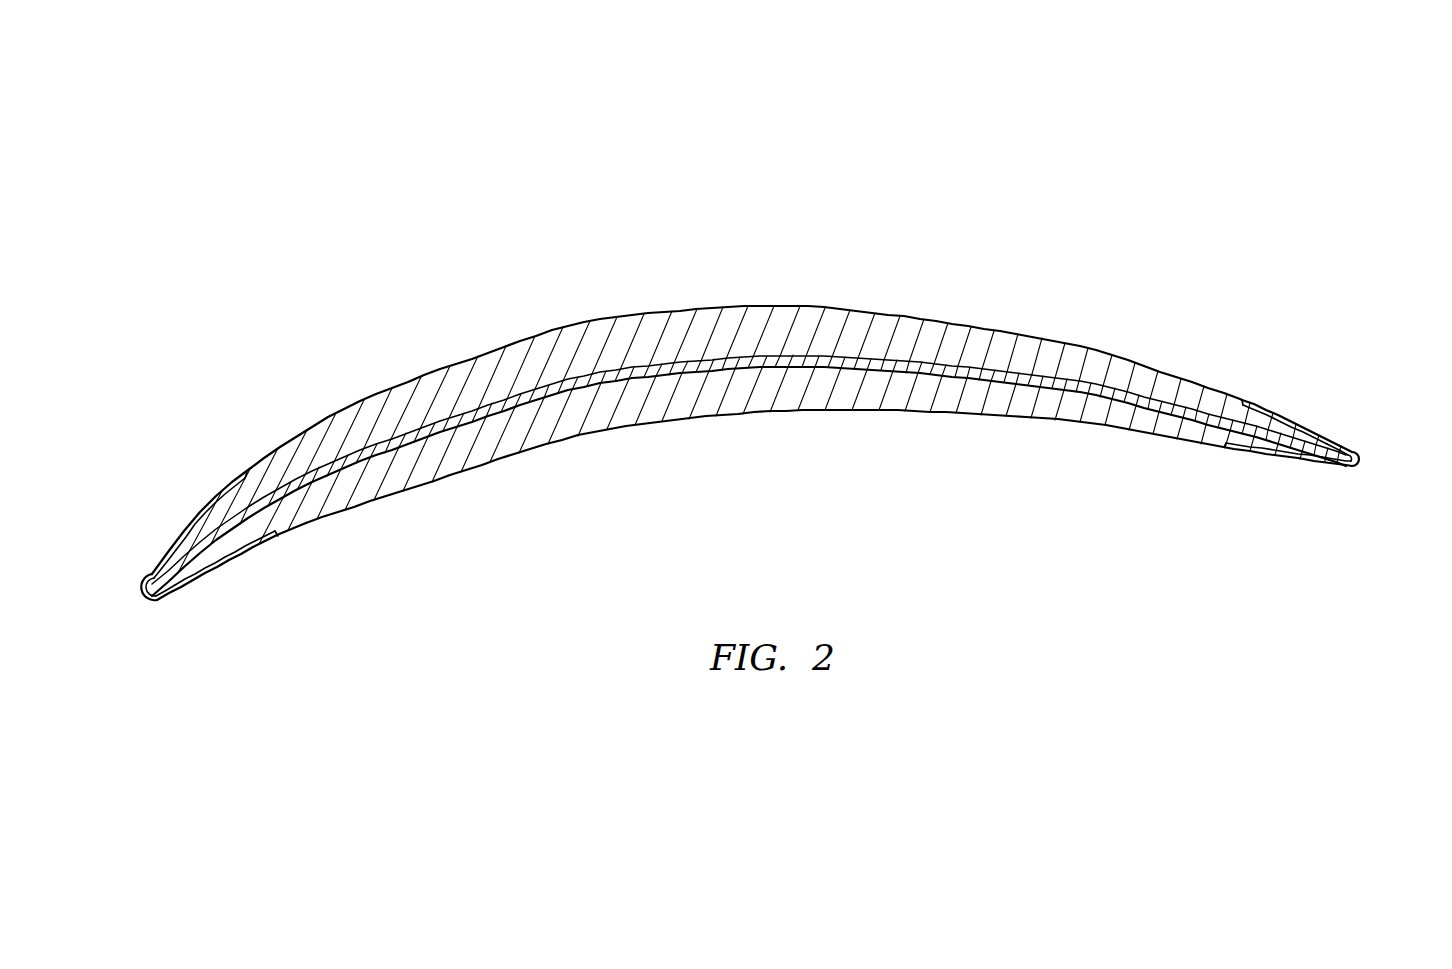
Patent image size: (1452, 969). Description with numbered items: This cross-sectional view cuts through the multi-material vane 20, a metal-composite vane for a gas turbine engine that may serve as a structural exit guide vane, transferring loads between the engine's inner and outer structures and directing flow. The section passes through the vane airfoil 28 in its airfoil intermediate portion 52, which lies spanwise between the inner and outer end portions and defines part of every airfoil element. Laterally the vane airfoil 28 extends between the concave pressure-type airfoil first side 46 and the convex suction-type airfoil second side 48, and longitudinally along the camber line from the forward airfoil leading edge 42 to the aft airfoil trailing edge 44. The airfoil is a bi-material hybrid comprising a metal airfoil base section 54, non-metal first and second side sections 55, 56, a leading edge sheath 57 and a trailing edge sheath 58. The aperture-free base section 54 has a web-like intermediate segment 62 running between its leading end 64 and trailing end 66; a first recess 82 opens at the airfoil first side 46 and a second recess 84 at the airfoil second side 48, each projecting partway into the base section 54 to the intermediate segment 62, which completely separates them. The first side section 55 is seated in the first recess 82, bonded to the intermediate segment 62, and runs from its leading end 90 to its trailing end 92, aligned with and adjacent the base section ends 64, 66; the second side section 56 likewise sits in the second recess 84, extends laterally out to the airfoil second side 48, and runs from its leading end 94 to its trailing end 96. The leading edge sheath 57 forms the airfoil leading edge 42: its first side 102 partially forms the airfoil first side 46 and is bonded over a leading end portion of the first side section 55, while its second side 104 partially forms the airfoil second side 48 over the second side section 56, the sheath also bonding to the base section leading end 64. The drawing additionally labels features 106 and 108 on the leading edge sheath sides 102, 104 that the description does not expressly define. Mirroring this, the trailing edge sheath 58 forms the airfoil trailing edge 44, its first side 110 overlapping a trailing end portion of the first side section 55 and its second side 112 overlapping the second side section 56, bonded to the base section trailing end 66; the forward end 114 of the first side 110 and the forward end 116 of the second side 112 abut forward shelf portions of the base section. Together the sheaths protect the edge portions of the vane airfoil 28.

The multi-material vane 20 is at (1139, 137).
The vane airfoil 28 is at (1140, 228).
The airfoil intermediate portion 52 is at (765, 403).
The airfoil leading edge 42 is at (147, 592).
The airfoil trailing edge 44 is at (1357, 466).
The airfoil first side 46 is at (600, 436).
The airfoil second side 48 is at (590, 318).
The airfoil base section 54 is at (395, 451).
The first side section 55 is at (498, 457).
The second side section 56 is at (463, 362).
The leading edge sheath 57 is at (210, 590).
The trailing edge sheath 58 is at (1292, 420).
The intermediate segment 62 is at (737, 373).
The leading end of the base section 64 is at (153, 598).
The trailing end of the base section 66 is at (1357, 458).
The first recess 82 is at (988, 392).
The second recess 84 is at (948, 347).
The leading end of the first side section 90 is at (166, 603).
The trailing end of the first side section 92 is at (1340, 470).
The leading end of the second side section 94 is at (147, 580).
The trailing end of the second side section 96 is at (1352, 450).
The first side of the leading edge sheath 102 is at (252, 556).
The second side of the leading edge sheath 104 is at (190, 522).
The leading edge sheath pressure side end 106 is at (282, 538).
The leading edge sheath suction side end 108 is at (243, 482).
The first side of the trailing edge sheath 110 is at (1260, 457).
The second side of the trailing edge sheath 112 is at (1268, 410).
The forward end of the trailing edge sheath first side 114 is at (1223, 447).
The forward end of the trailing edge sheath second side 116 is at (1243, 400).